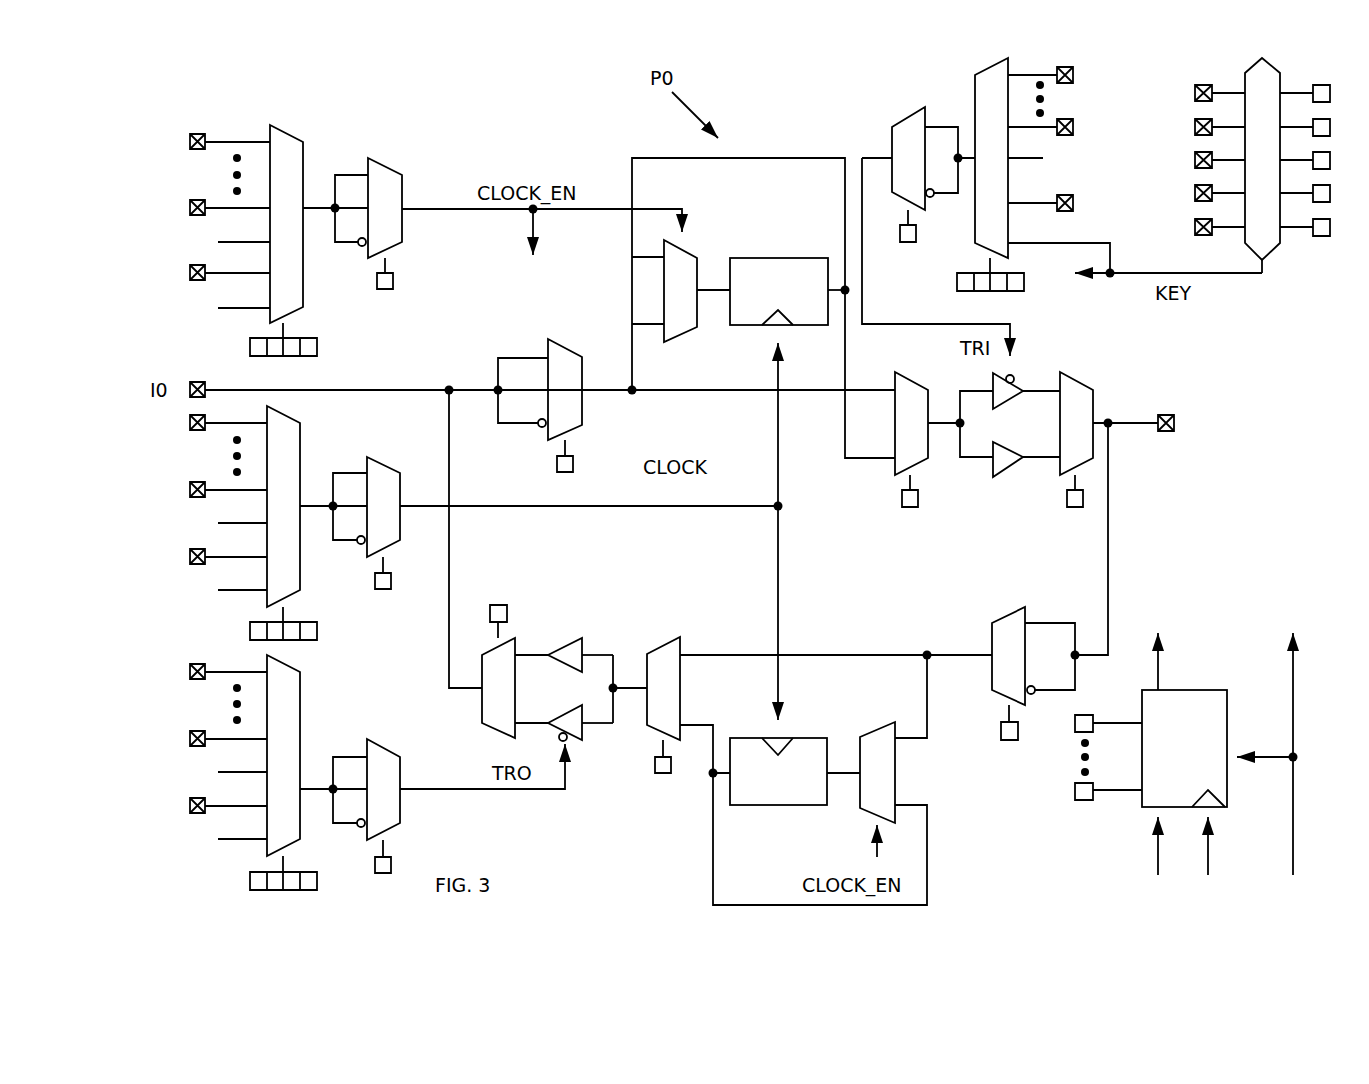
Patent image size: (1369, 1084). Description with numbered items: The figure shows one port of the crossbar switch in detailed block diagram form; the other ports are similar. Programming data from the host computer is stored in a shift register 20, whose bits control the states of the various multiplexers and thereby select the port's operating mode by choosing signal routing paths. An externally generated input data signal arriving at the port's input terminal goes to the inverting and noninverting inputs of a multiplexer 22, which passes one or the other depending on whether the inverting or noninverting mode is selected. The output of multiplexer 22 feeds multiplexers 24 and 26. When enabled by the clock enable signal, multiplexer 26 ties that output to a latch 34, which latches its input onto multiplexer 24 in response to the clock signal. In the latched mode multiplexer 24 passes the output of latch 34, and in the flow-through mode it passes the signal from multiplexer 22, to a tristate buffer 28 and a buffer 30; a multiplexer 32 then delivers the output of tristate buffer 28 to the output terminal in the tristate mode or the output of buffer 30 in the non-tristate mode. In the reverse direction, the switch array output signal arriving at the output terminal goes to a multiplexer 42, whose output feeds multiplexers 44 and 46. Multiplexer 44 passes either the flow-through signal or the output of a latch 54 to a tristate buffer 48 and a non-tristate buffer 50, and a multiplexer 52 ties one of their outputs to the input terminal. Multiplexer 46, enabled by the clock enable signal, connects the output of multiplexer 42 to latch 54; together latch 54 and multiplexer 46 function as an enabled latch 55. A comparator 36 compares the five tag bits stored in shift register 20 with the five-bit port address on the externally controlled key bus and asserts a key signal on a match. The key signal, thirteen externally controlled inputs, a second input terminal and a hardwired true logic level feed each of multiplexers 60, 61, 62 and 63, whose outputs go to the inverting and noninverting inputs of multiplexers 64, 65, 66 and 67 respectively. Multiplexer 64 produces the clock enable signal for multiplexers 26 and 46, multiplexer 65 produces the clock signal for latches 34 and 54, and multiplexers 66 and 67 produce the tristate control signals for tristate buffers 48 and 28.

The shift register 20 is at (1173, 803).
The multiplexer 22 is at (576, 399).
The multiplexer 24 is at (923, 433).
The multiplexer 26 is at (692, 295).
The tristate buffer 28 is at (1015, 393).
The buffer 30 is at (1013, 461).
The multiplexer 32 is at (1088, 433).
The latch 34 is at (822, 323).
The comparator 36 is at (1251, 236).
The multiplexer 42 is at (1020, 665).
The multiplexer 44 is at (675, 693).
The multiplexer 46 is at (888, 781).
The tristate buffer 48 is at (565, 725).
The non-tristate buffer 50 is at (563, 650).
The multiplexer 52 is at (510, 698).
The latch 54 is at (821, 803).
The enabled latch 55 is at (695, 847).
The multiplexer 60 is at (298, 246).
The multiplexer 61 is at (295, 513).
The multiplexer 62 is at (295, 760).
The multiplexer 63 is at (1003, 169).
The multiplexer 64 is at (396, 219).
The multiplexer 65 is at (395, 516).
The multiplexer 66 is at (395, 798).
The multiplexer 67 is at (919, 170).